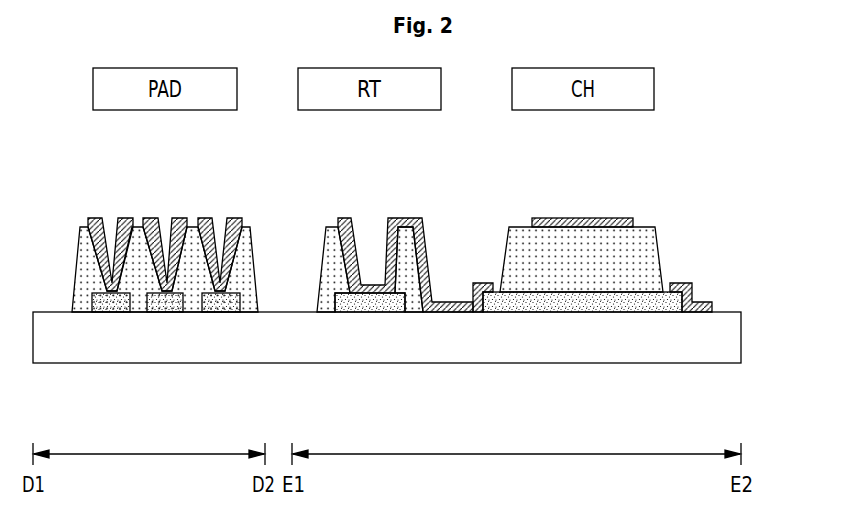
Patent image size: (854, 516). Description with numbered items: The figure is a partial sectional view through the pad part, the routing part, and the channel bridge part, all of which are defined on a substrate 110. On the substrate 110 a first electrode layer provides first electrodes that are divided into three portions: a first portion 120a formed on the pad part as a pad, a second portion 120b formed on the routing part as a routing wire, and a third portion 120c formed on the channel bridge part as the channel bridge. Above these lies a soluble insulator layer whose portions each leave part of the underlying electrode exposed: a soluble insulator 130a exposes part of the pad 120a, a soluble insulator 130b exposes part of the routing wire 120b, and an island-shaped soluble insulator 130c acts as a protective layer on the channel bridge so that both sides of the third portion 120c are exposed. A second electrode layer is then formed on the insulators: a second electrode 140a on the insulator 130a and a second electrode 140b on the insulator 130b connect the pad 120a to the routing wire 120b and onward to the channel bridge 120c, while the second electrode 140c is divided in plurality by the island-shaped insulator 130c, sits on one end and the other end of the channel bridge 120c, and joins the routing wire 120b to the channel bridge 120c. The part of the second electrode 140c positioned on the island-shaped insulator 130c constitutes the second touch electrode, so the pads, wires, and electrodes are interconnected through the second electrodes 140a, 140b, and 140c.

The substrate 110 is at (727, 340).
The first portion of the first electrodes 120a is at (165, 313).
The second portion of the first electrodes 120b is at (372, 305).
The third portion of the first electrodes 120c is at (592, 305).
The soluble insulator on the pad part 130a is at (197, 226).
The soluble insulator on the routing part 130b is at (329, 226).
The island-shaped soluble insulator 130c is at (520, 242).
The second electrode on the pad part 140a is at (122, 219).
The second electrode on the routing part 140b is at (407, 219).
The second electrode on the channel bridge part 140c is at (583, 219).